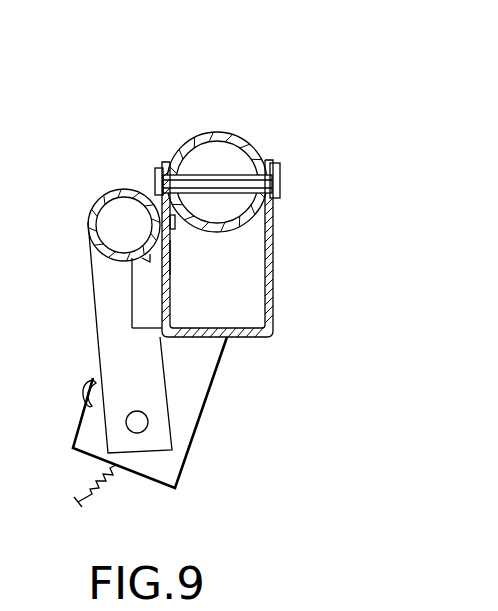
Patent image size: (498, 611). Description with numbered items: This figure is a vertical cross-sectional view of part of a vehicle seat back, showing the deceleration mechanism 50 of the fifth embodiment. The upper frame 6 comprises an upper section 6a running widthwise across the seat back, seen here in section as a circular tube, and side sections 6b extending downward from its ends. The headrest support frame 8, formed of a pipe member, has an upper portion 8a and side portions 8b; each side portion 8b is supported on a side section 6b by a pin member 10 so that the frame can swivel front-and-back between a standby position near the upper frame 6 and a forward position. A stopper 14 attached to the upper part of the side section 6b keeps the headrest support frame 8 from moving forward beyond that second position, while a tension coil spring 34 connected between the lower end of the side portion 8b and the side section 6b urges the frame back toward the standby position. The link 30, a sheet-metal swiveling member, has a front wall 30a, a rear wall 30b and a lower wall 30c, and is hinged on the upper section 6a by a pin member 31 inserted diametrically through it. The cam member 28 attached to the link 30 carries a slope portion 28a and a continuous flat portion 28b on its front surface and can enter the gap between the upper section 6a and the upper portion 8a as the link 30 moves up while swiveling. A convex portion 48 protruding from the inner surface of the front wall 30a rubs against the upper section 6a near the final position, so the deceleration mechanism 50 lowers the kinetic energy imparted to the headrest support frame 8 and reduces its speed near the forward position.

The upper frame 6 is at (209, 118).
The upper section 6a is at (242, 140).
The side section 6b is at (183, 473).
The headrest support frame 8 is at (33, 205).
The upper portion 8a is at (88, 220).
The side portion 8b is at (93, 277).
The pin member 10 is at (148, 422).
The stopper 14 is at (80, 393).
The cam member 28 is at (150, 317).
The slope portion 28a is at (142, 258).
The flat portion 28b is at (130, 302).
The link 30 is at (290, 229).
The front wall 30a is at (171, 298).
The rear wall 30b is at (270, 313).
The lower wall 30c is at (252, 337).
The pin member 31 is at (282, 178).
The tension coil spring 34 is at (103, 487).
The convex portion 48 is at (183, 233).
The deceleration mechanism 50 is at (184, 257).